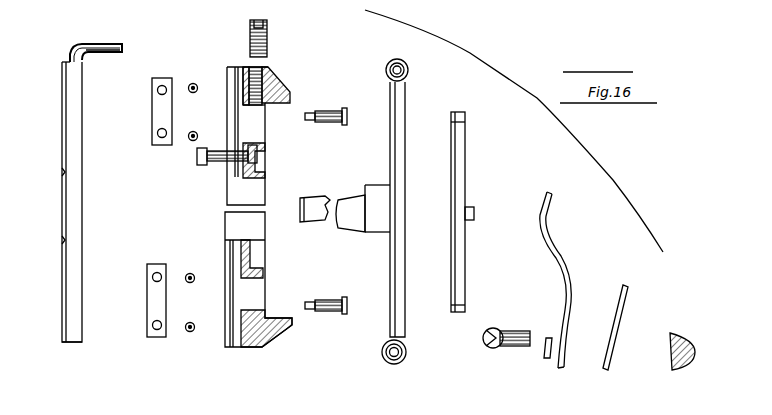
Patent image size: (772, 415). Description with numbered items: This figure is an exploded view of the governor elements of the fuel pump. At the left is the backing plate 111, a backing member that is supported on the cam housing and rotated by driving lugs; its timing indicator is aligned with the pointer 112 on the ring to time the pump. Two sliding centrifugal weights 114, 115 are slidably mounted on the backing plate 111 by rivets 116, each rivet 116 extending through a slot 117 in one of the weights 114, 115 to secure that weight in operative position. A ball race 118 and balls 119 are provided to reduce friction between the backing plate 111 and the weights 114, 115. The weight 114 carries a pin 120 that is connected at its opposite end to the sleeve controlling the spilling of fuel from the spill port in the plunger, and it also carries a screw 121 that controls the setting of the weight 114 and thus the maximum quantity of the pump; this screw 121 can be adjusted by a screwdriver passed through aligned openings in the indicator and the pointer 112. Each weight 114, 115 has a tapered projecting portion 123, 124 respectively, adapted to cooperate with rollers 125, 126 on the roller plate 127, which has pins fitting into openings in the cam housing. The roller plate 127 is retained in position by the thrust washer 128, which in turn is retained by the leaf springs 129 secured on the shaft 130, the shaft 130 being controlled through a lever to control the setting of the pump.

The backing plate 111 is at (70, 128).
The pointer 112 is at (108, 47).
The sliding centrifugal weight 114 is at (265, 75).
The sliding centrifugal weight 115 is at (250, 345).
The rivet 116 is at (331, 112).
The slot 117 is at (250, 127).
The ball race 118 is at (157, 118).
The balls 119 is at (192, 92).
The pin 120 is at (209, 163).
The screw 121 is at (250, 36).
The tapered projecting portion 123 is at (294, 95).
The tapered projecting portion 124 is at (283, 318).
The roller 125 is at (391, 64).
The roller 126 is at (408, 353).
The roller plate 127 is at (397, 262).
The thrust washer 128 is at (310, 196).
The leaf springs 129 is at (565, 255).
The shaft 130 is at (672, 368).